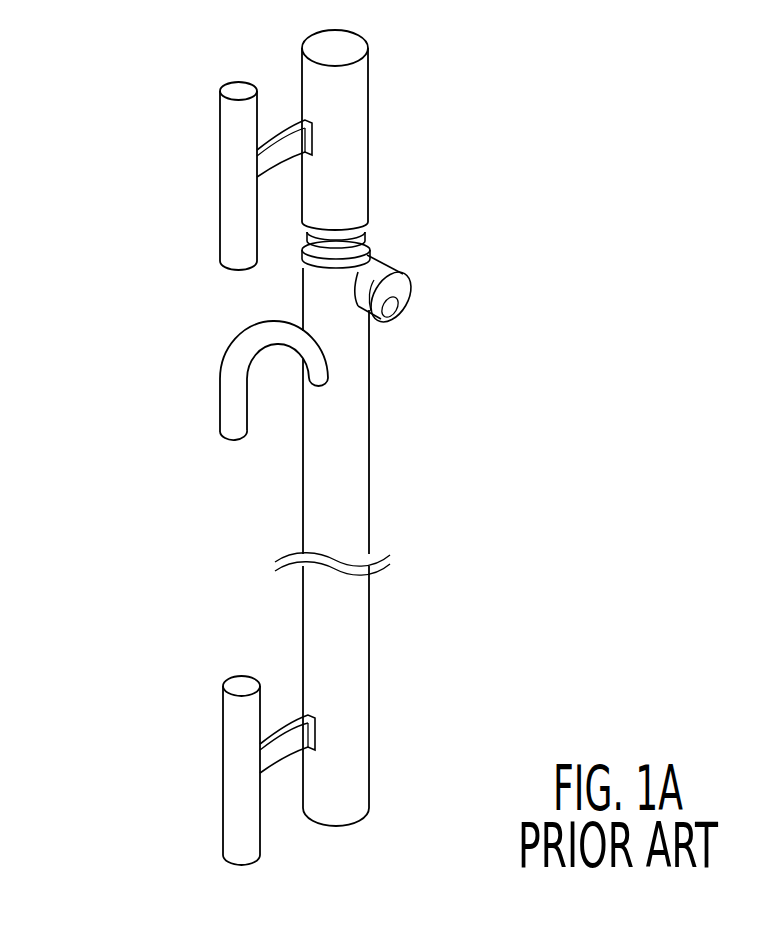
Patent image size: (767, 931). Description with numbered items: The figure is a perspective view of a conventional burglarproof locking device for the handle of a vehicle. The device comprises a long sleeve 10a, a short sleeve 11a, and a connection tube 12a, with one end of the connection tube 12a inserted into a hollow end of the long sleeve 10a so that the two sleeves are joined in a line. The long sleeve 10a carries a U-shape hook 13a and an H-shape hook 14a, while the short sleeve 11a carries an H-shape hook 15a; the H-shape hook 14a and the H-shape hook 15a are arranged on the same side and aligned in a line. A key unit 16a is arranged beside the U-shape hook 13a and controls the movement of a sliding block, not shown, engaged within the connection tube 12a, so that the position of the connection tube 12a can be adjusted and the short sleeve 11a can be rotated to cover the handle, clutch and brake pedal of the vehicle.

The long sleeve 10a is at (357, 511).
The short sleeve 11a is at (355, 160).
The connection tube 12a is at (365, 246).
The U-shape hook 13a is at (233, 418).
The H-shape hook 14a is at (238, 786).
The H-shape hook 15a is at (238, 160).
The key unit 16a is at (392, 314).